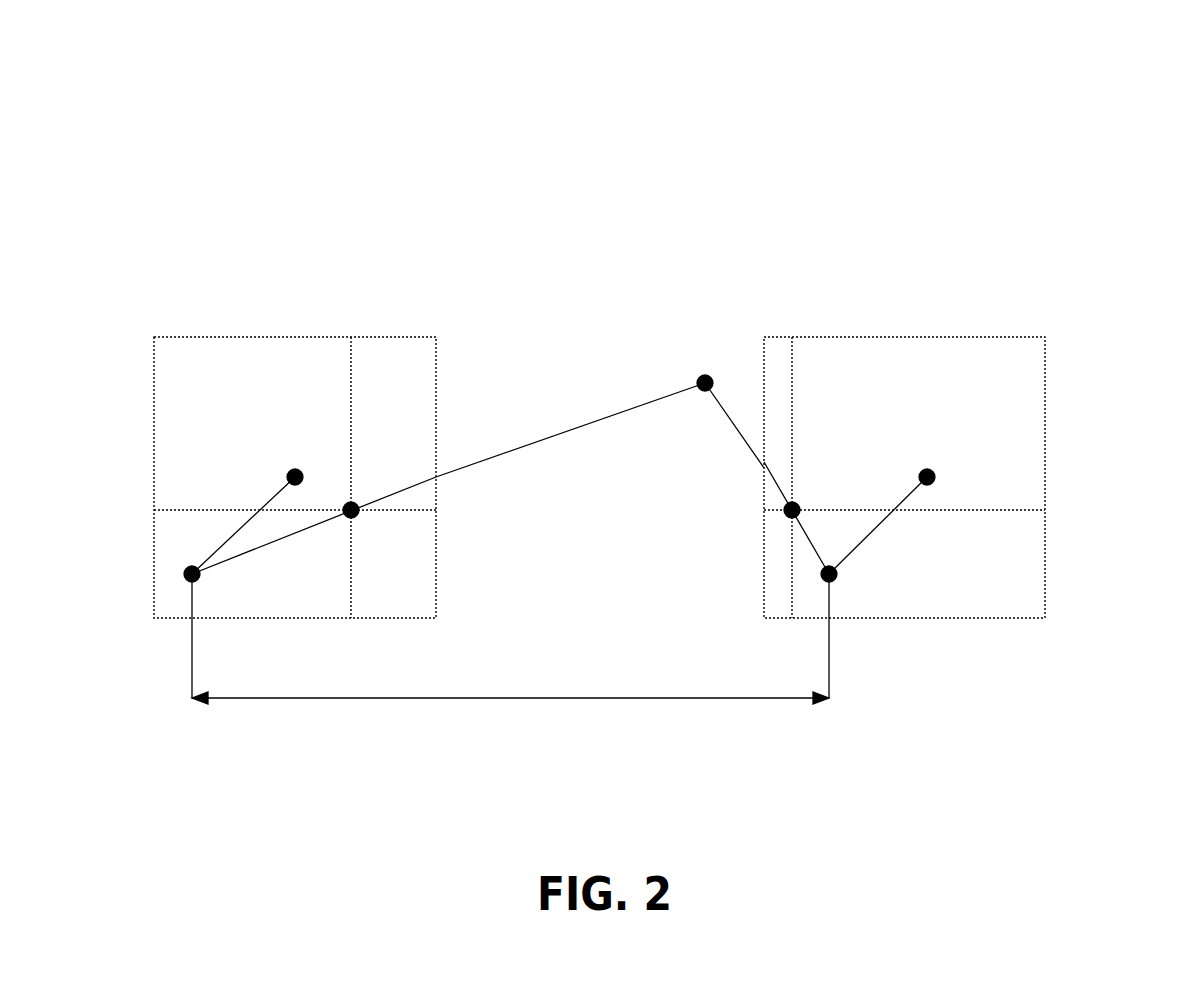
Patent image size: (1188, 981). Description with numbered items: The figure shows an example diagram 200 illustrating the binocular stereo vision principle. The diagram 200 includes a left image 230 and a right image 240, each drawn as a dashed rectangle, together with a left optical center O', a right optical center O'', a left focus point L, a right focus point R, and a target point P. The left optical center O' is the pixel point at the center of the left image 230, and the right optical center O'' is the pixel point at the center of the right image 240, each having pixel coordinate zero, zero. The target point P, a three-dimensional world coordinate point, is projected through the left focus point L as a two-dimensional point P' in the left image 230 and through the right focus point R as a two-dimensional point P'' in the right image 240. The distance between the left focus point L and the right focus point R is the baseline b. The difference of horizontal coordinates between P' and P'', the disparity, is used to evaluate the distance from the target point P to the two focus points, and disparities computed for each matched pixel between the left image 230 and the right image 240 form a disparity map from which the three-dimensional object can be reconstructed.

The diagram 200 is at (950, 130).
The left image 230 is at (153, 407).
The right image 240 is at (1045, 417).